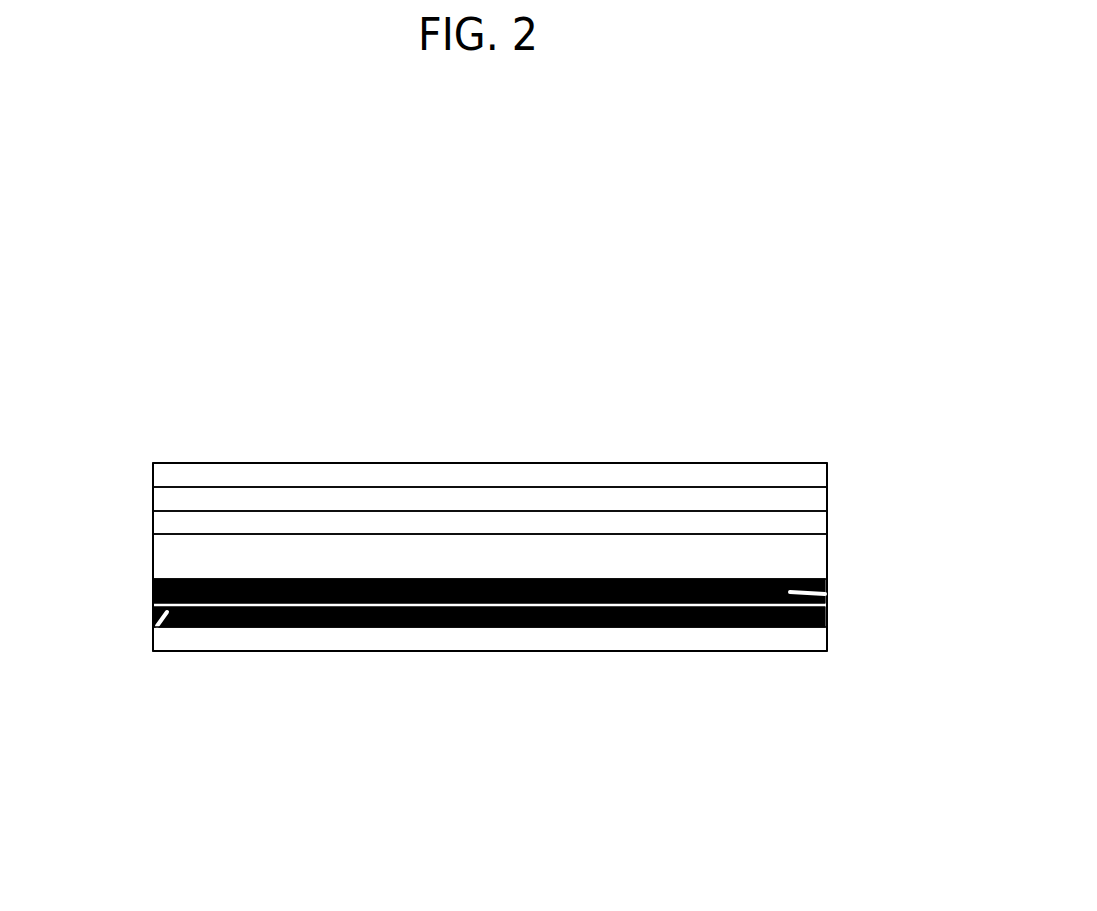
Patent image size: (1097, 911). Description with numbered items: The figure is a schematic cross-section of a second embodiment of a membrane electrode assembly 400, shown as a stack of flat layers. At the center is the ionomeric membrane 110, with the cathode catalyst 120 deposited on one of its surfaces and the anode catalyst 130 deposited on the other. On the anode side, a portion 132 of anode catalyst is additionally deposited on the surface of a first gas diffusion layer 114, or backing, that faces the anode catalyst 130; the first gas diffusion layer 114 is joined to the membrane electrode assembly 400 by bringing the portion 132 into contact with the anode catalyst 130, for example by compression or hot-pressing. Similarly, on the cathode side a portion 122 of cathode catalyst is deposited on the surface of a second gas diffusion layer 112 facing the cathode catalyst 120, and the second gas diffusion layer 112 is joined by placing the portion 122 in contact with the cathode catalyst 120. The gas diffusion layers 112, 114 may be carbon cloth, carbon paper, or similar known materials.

The membrane electrode assembly 400 is at (495, 272).
The ionomeric membrane 110 is at (167, 570).
The second gas diffusion layer 112 is at (815, 475).
The first gas diffusion layer 114 is at (817, 638).
The cathode catalyst 120 is at (815, 522).
The portion of cathode catalyst 122 is at (165, 498).
The anode catalyst 130 is at (795, 592).
The portion of anode catalyst 132 is at (165, 615).